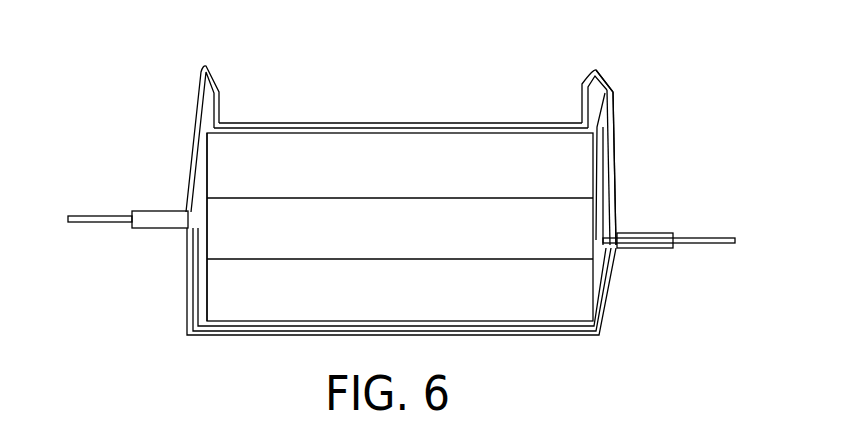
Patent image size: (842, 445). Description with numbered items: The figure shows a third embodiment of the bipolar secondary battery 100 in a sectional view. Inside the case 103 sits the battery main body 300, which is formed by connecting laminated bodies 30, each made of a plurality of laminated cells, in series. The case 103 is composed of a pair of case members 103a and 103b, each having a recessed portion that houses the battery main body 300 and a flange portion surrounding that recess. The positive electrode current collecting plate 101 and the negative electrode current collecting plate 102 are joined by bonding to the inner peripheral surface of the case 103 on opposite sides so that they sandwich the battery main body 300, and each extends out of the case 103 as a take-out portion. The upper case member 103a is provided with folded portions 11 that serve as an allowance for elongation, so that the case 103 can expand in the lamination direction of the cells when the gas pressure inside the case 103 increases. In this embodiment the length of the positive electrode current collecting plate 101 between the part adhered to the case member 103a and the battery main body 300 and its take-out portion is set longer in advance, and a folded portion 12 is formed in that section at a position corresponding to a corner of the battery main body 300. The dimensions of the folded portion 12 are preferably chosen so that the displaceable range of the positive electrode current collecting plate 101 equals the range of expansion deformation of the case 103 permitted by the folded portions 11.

The bipolar secondary battery 100 is at (437, 87).
The folded portion 11 is at (223, 78).
The folded portion 12 is at (614, 91).
The laminated body 30 is at (547, 212).
The battery main body 300 is at (207, 187).
The positive electrode current collecting plate 101 is at (717, 237).
The negative electrode current collecting plate 102 is at (85, 214).
The case 103 is at (622, 135).
The case member 103a is at (616, 193).
The case member 103b is at (612, 265).